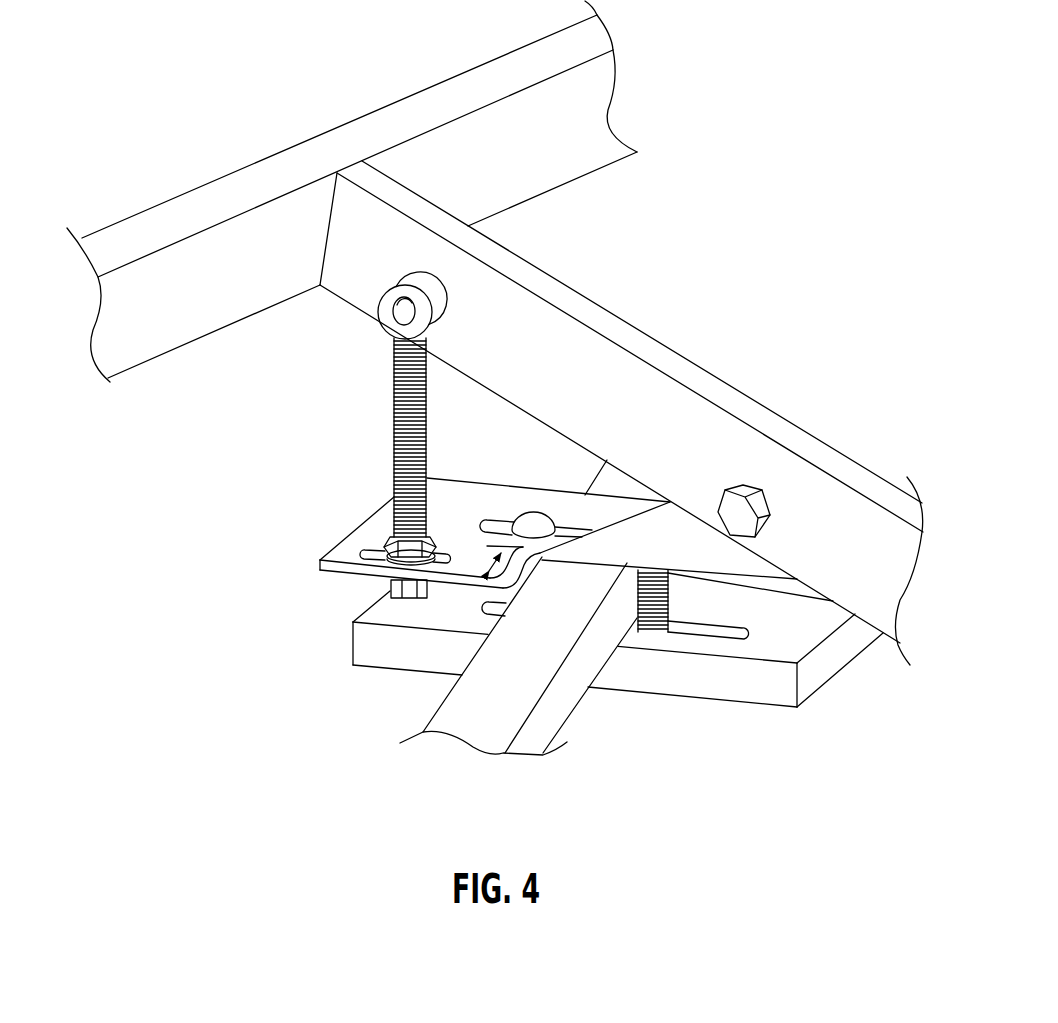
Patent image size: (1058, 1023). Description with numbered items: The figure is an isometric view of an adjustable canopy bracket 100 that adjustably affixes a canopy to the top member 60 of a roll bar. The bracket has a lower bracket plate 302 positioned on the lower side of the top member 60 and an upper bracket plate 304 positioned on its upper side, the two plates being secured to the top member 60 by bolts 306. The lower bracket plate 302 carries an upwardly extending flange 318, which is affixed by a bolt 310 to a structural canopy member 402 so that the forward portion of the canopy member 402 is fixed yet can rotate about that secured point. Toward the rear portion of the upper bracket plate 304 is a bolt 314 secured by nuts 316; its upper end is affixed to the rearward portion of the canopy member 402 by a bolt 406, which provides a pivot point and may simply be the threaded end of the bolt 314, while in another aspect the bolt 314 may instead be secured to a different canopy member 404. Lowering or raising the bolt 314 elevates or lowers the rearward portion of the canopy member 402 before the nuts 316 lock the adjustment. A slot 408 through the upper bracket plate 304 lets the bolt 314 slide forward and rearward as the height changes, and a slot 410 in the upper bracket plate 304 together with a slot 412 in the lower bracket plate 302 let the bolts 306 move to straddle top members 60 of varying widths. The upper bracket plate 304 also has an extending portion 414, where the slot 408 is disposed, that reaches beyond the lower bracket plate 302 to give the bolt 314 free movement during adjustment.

The top member 60 is at (551, 652).
The adjustable canopy bracket 100 is at (675, 738).
The lower bracket plate 302 is at (830, 662).
The upper bracket plate 304 is at (318, 564).
The bolt 306 is at (533, 511).
The bolt 310 is at (737, 488).
The bolt 314 is at (394, 404).
The nut 316 is at (383, 548).
The flange 318 is at (692, 559).
The canopy member 402 is at (611, 398).
The canopy member 404 is at (243, 284).
The bolt 406 is at (407, 313).
The slot 408 is at (362, 547).
The slot 410 is at (488, 516).
The slot 412 is at (746, 627).
The extending portion 414 is at (486, 566).